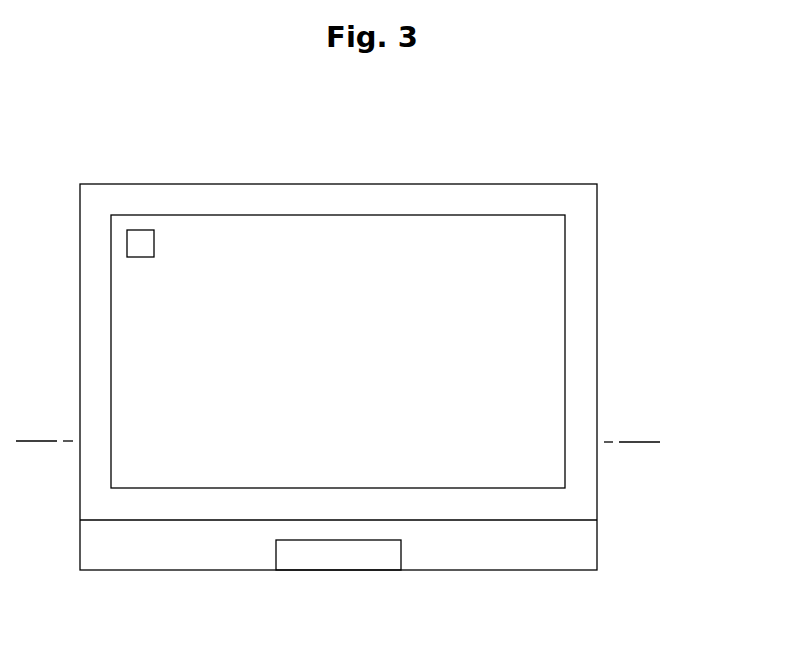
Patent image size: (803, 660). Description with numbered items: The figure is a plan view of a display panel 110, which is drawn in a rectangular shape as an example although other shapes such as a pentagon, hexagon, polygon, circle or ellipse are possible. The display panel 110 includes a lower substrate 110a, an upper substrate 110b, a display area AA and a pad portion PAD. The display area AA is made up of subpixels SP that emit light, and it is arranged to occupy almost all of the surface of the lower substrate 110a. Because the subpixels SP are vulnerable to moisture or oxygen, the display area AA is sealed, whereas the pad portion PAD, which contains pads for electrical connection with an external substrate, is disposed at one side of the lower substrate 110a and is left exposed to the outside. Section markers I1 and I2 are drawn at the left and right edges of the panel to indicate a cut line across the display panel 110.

The display panel 110 is at (683, 322).
The lower substrate 110a is at (597, 396).
The upper substrate 110b is at (393, 316).
The display area AA is at (270, 240).
The subpixel SP is at (139, 230).
The pad portion PAD is at (338, 553).
The section line I1 is at (24, 441).
The section line I2 is at (652, 442).